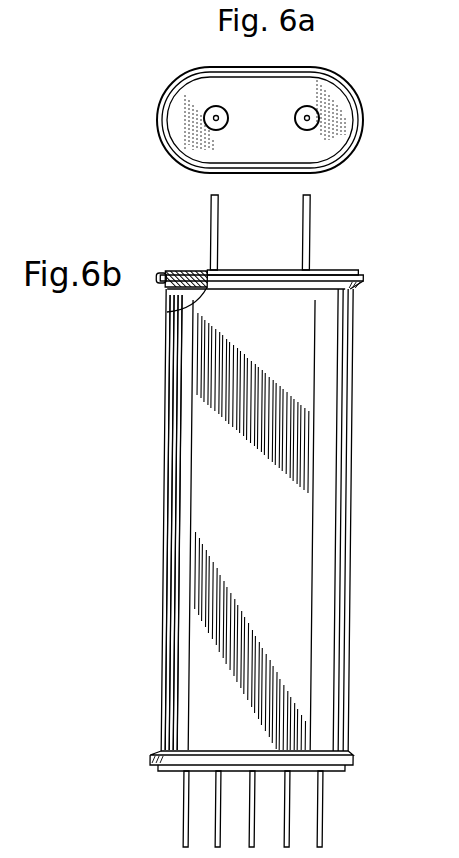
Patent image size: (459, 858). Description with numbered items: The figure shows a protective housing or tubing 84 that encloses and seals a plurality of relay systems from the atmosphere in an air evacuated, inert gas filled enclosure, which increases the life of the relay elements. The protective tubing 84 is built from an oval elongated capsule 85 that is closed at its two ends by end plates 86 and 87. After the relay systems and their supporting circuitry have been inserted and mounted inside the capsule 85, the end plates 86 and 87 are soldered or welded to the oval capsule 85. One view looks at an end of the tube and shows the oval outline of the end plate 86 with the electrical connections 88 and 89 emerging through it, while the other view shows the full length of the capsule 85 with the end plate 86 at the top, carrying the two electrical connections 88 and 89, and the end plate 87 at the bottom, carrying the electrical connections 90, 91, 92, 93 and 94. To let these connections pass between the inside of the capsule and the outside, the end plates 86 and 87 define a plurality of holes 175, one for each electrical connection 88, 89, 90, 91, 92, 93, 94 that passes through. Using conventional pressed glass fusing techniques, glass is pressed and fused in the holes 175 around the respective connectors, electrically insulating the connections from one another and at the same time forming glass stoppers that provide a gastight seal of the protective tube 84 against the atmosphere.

In FIG. 6B, the protective housing or tubing 84 is at (353, 412).
In FIG. 6B, the oval elongated capsule 85 is at (335, 602).
In FIG. 6A, the end plate 86 is at (345, 100).
In FIG. 6B, the end plate 86 is at (170, 270).
In FIG. 6B, the end plate 87 is at (332, 768).
In FIG. 6A, the electrical connection 88 is at (216, 106).
In FIG. 6B, the electrical connection 88 is at (211, 220).
In FIG. 6A, the electrical connection 89 is at (307, 122).
In FIG. 6B, the electrical connection 89 is at (312, 222).
In FIG. 6B, the electrical connection 90 is at (185, 800).
In FIG. 6B, the electrical connection 91 is at (215, 825).
In FIG. 6B, the electrical connection 92 is at (252, 828).
In FIG. 6B, the electrical connection 93 is at (288, 808).
In FIG. 6B, the electrical connection 94 is at (320, 793).
In FIG. 6A, the holes 175 is at (296, 110).